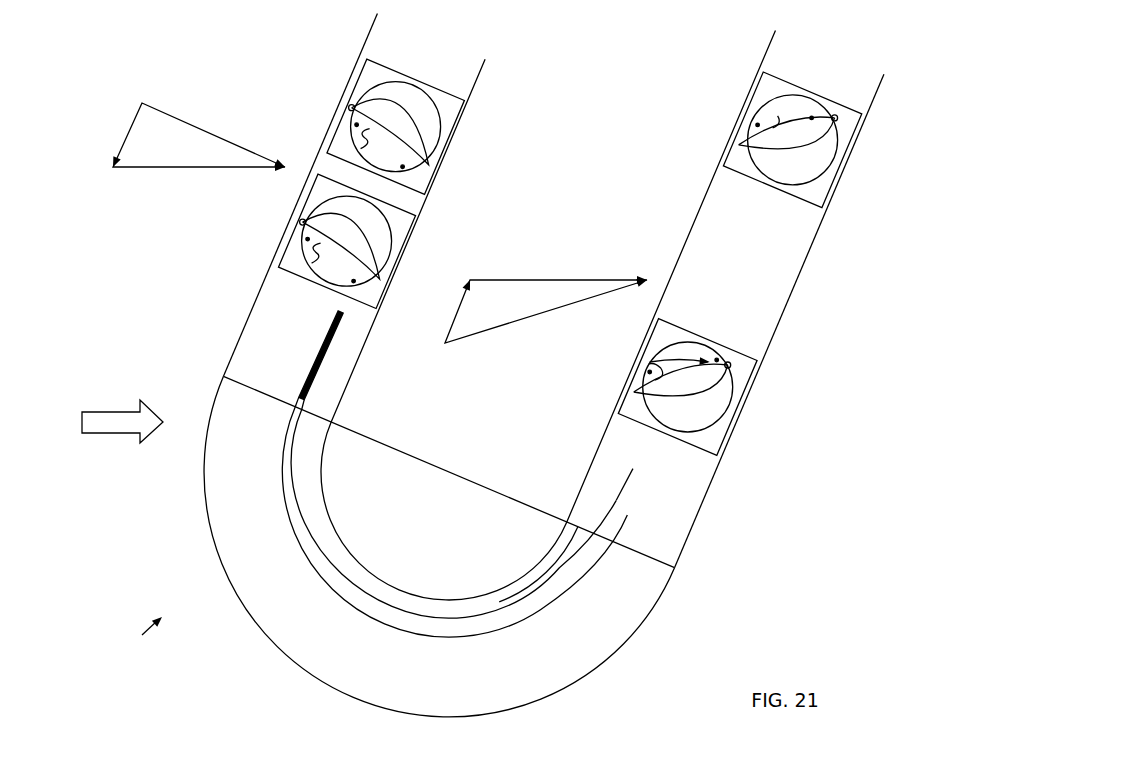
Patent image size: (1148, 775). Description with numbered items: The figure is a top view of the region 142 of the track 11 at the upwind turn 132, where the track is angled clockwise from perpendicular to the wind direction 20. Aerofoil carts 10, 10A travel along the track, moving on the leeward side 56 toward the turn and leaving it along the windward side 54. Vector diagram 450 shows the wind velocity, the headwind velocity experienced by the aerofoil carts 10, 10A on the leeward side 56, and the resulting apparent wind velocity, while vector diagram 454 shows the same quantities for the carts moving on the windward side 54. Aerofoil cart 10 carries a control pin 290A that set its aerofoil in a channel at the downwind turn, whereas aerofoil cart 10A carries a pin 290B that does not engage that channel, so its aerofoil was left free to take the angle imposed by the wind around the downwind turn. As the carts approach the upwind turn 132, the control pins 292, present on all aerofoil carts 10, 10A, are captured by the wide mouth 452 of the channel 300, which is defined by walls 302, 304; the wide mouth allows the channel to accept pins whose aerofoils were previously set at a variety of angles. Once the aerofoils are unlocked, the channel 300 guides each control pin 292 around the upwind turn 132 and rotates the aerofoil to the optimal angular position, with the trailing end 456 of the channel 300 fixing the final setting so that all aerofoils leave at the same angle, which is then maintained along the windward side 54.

The aerofoil cart 10 is at (307, 197).
The aerofoil cart 10A is at (357, 77).
The track 11 is at (506, 387).
The wind direction 20 is at (110, 410).
The windward side 54 is at (233, 353).
The leeward side 56 is at (717, 483).
The upwind turn 132 is at (660, 602).
The region 142 is at (132, 636).
The control pin 290A is at (305, 253).
The control pin 290B is at (353, 137).
The control pin 292 is at (425, 182).
The channel 300 is at (438, 490).
The wall 302 is at (542, 610).
The wall 304 is at (565, 551).
The vector diagram 450 is at (502, 278).
The wide mouth 452 is at (587, 541).
The vector diagram 454 is at (162, 112).
The trailing end 456 is at (340, 322).